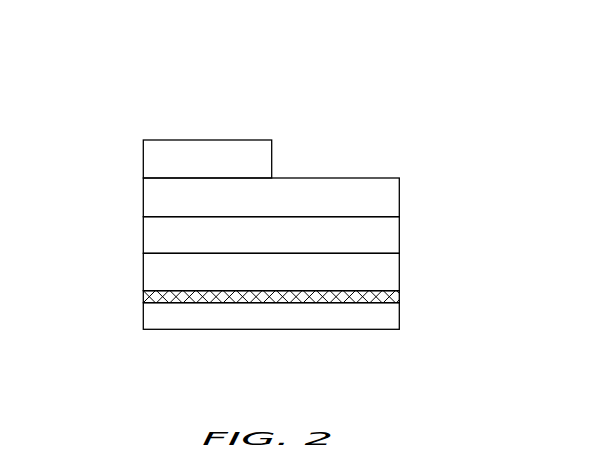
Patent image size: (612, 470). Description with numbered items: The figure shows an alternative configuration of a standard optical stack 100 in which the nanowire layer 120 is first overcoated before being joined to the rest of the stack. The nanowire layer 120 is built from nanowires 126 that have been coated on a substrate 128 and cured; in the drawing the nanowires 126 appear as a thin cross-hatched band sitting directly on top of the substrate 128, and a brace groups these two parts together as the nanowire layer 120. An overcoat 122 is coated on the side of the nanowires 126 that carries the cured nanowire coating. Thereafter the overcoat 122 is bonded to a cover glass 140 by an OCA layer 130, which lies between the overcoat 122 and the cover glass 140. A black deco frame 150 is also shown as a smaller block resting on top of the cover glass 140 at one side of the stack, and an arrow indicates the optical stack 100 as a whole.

The optical stack 100 is at (413, 103).
The nanowire layer 120 is at (270, 309).
The overcoat 122 is at (143, 272).
The nanowires 126 is at (399, 295).
The substrate 128 is at (399, 311).
The OCA layer 130 is at (143, 237).
The cover glass 140 is at (143, 198).
The black deco frame 150 is at (143, 158).